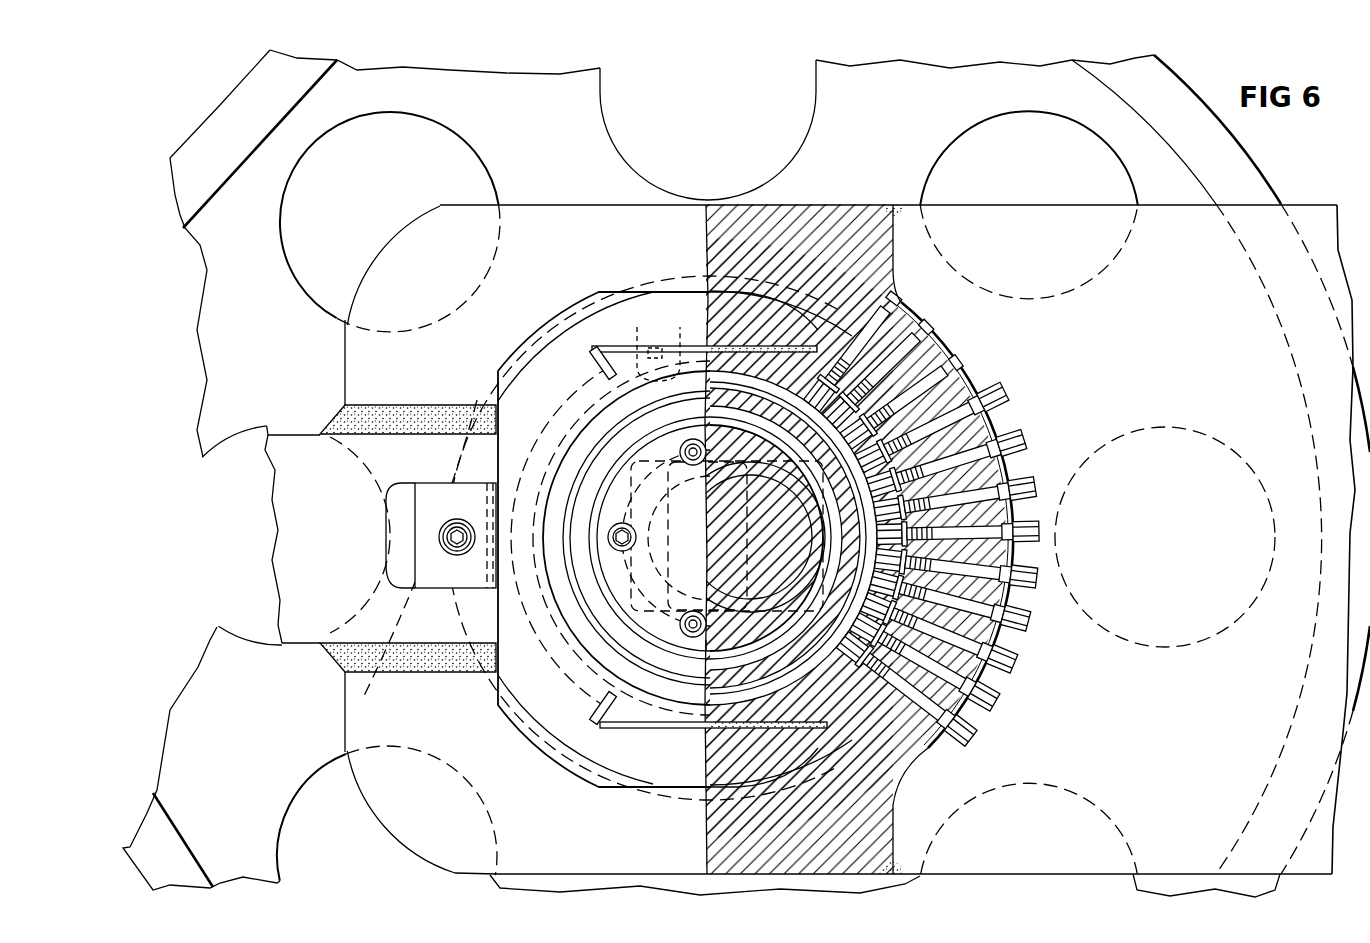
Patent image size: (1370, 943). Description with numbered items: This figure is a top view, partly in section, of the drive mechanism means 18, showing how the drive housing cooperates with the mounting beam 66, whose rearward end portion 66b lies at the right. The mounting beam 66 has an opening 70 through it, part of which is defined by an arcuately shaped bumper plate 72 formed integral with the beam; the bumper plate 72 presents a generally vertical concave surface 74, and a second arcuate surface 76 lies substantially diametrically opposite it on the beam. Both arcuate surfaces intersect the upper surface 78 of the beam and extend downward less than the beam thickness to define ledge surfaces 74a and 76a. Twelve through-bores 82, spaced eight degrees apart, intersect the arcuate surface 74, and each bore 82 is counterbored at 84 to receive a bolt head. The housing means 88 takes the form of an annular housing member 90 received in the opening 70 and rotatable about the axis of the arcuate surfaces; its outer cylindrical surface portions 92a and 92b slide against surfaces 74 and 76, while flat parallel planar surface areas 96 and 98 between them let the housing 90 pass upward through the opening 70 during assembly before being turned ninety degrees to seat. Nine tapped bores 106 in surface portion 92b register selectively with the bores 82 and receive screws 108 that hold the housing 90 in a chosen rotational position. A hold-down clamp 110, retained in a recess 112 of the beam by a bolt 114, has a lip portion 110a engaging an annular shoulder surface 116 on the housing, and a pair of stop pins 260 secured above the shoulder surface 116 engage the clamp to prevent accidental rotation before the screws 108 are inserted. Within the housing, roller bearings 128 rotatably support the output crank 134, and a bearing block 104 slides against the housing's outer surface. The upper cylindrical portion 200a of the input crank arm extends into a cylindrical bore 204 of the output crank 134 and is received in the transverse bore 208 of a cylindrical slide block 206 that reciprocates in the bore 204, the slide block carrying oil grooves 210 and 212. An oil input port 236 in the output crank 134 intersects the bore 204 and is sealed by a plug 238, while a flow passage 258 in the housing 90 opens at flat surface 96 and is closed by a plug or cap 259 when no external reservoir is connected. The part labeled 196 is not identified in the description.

The drive mechanism means 18 is at (398, 816).
The mounting beam 66 is at (1318, 861).
The rearward end portion 66b is at (1312, 204).
The opening 70 is at (655, 793).
The bumper plate 72 is at (901, 797).
The concave surface 74 is at (872, 706).
The ledge surface 74a is at (877, 692).
The second arcuate surface 76 is at (456, 605).
The ledge surface 76a is at (458, 484).
The upper surface 78 is at (346, 719).
The through-bores 82 is at (915, 333).
The counterbore 84 is at (894, 303).
The housing means 88 is at (706, 733).
The housing member 90 is at (762, 730).
The outer cylindrical surface portion 92a is at (548, 394).
The outer cylindrical surface portion 92b is at (875, 332).
The flat planar surface area 96 is at (660, 730).
The flat planar surface area 98 is at (772, 348).
The bearing block 104 is at (560, 760).
The tapped bores 106 is at (878, 464).
The screws 108 is at (1043, 414).
The hold-down clamp 110 is at (432, 486).
The lip portion 110a is at (500, 536).
The recess 112 is at (412, 592).
The bolt 114 is at (453, 550).
The annular shoulder surface 116 is at (528, 657).
The roller bearings 128 is at (800, 364).
The output crank 134 is at (711, 645).
The block portion 196 is at (190, 705).
The upper cylindrical portion 200a is at (722, 617).
The cylindrical bore 204 is at (683, 450).
The slide block 206 is at (681, 628).
The transverse cylindrical bore 208 is at (731, 468).
The oil groove 210 is at (768, 592).
The oil groove 212 is at (668, 606).
The oil input port 236 is at (618, 568).
The plug 238 is at (610, 531).
The flow passage 258 is at (693, 346).
The plug or cap 259 is at (652, 346).
The stop pins 260 is at (597, 351).